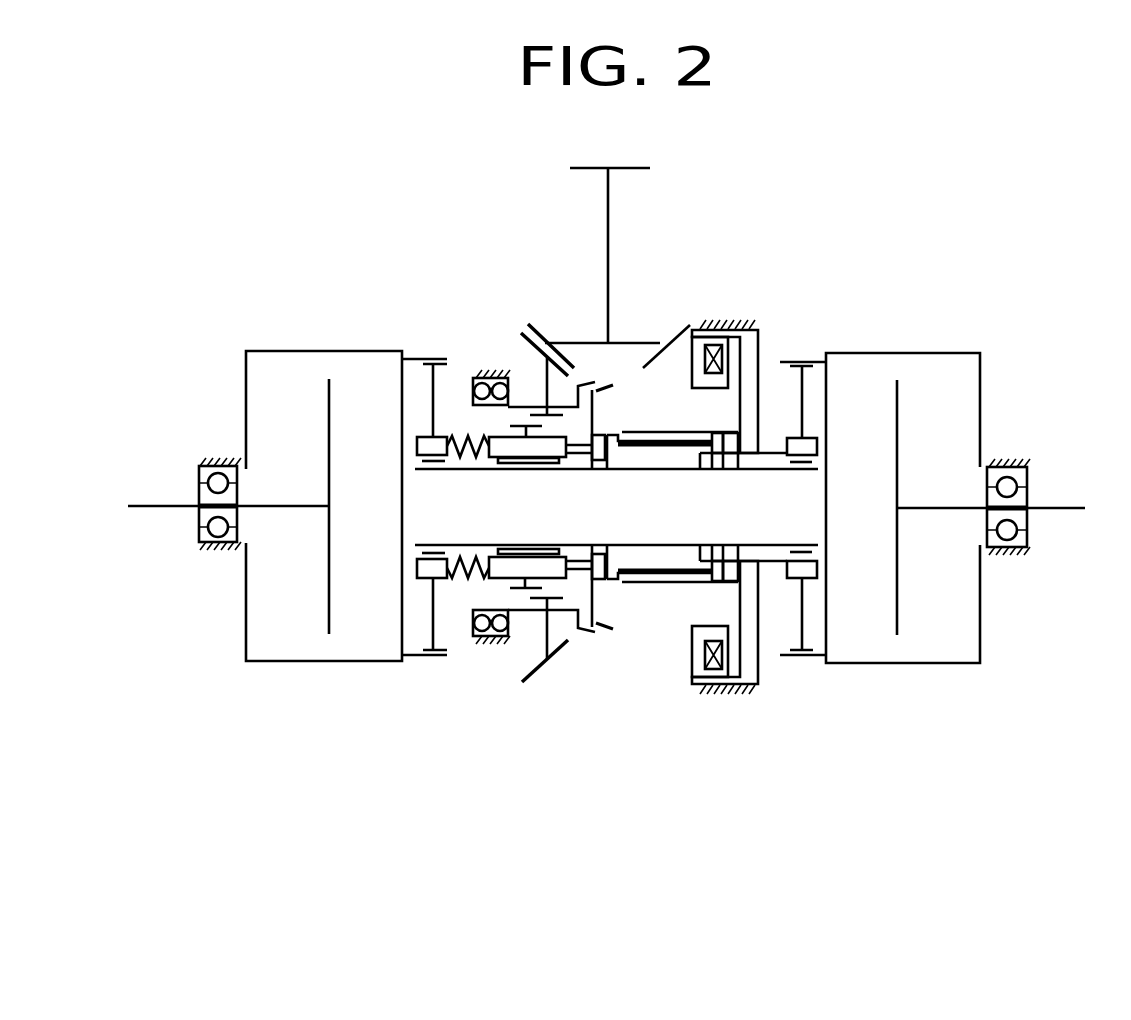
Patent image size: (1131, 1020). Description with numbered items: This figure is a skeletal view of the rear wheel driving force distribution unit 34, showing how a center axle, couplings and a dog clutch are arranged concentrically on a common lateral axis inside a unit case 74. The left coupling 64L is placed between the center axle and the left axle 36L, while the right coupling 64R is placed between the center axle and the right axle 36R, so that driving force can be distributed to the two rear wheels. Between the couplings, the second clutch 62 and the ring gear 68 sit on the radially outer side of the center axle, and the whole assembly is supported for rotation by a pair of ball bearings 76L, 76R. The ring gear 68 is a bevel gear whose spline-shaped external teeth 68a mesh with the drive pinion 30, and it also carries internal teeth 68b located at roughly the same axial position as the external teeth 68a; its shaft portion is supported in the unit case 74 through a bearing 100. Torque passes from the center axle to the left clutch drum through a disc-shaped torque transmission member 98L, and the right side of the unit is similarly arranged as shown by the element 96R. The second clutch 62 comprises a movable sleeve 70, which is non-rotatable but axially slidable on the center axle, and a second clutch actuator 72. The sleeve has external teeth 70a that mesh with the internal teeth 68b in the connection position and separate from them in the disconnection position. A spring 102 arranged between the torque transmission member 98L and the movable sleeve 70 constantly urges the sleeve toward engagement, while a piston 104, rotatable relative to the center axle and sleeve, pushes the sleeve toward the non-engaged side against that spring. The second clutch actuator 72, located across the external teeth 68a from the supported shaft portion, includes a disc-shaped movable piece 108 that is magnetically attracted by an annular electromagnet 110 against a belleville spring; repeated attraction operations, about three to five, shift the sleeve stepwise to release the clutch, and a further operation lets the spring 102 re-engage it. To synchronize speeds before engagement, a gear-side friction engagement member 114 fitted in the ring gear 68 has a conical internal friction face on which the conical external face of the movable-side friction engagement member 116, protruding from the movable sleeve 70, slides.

The drive pinion 30 is at (608, 210).
The rear wheel driving force distribution unit 34 is at (909, 219).
The left axle 36L is at (140, 497).
The right axle 36R is at (1082, 513).
The second clutch 62 is at (594, 816).
The left coupling 64L is at (307, 321).
The right coupling 64R is at (972, 347).
The ring gear 68 is at (543, 372).
The external teeth 68a is at (526, 679).
The internal teeth 68b is at (537, 617).
The movable sleeve 70 is at (583, 458).
The external teeth 70a is at (510, 590).
The second clutch actuator 72 is at (737, 703).
The unit case 74 is at (735, 317).
The left bearing 76L is at (217, 458).
The right bearing 76R is at (1027, 479).
The right gear shaft 96R is at (805, 392).
The torque transmission member 98L is at (432, 385).
The bearing 100 is at (475, 642).
The spring 102 is at (462, 585).
The piston 104 is at (645, 568).
The movable piece 108 is at (748, 657).
The electromagnet 110 is at (693, 660).
The gear-side friction engagement member 114 is at (587, 632).
The movable-side friction engagement member 116 is at (593, 613).